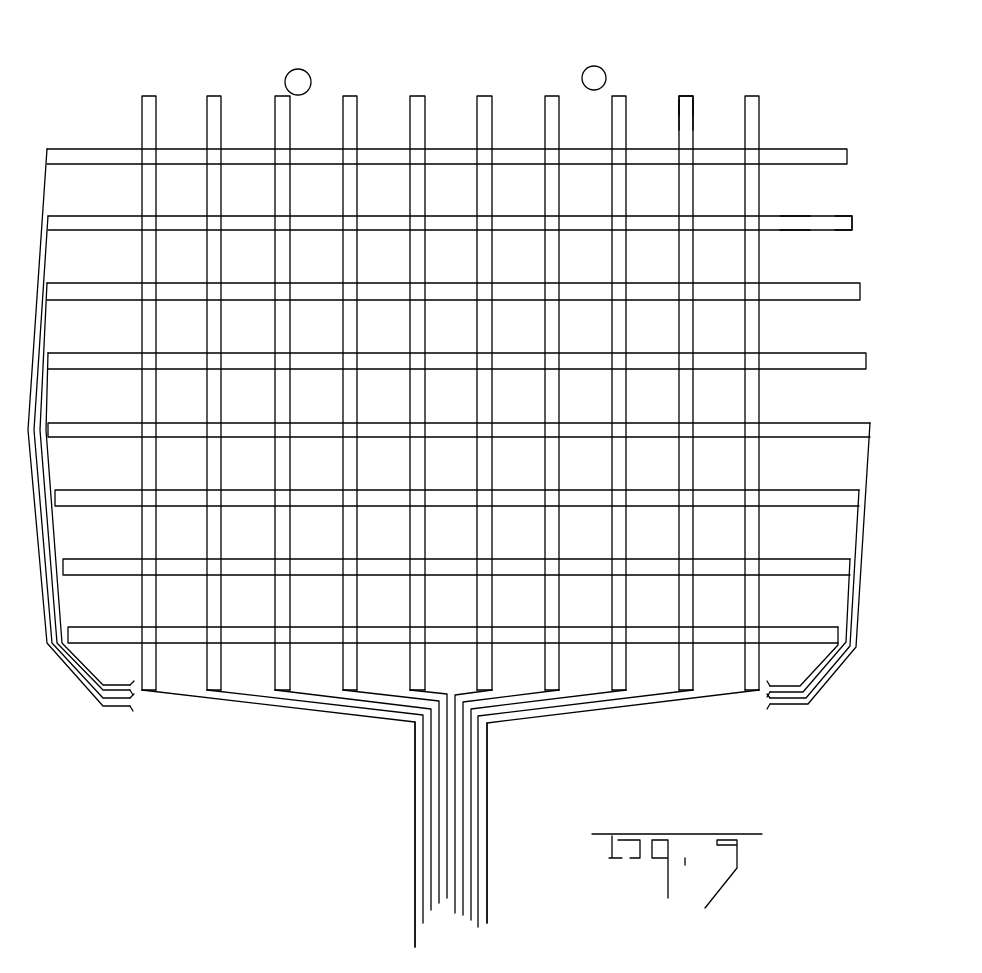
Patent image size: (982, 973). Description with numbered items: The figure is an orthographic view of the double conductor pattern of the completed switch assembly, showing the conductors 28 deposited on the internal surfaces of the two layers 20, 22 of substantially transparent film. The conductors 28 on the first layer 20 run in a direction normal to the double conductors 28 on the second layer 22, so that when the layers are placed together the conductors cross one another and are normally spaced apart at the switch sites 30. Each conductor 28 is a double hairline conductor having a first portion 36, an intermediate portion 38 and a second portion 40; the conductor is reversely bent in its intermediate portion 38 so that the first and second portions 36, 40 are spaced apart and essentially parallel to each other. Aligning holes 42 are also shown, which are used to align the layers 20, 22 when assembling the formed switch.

The conductors 28 is at (488, 93).
The switch sites 30 is at (150, 156).
The second layer 22 is at (289, 714).
The first layer 20 is at (451, 834).
The aligning holes 42 is at (290, 70).
The intermediate portion 38 is at (689, 92).
The first portion 36 is at (677, 114).
The second portion 40 is at (694, 110).